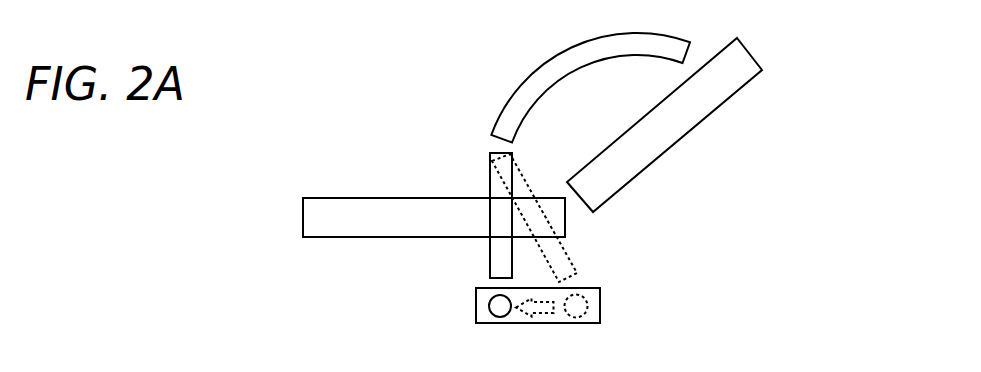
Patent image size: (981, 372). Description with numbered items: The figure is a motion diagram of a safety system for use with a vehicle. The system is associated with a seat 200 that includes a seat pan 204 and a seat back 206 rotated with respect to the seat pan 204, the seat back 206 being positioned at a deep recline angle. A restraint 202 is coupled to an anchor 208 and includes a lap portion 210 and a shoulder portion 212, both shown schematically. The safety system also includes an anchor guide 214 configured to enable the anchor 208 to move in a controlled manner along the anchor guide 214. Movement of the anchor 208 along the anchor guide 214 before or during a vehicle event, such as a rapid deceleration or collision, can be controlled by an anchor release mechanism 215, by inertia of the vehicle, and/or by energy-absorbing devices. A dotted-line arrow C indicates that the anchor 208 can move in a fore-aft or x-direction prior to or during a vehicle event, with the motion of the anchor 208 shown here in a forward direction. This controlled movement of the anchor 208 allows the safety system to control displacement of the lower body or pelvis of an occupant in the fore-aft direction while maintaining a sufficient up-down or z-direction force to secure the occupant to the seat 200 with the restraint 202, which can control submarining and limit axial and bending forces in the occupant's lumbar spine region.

The seat 200 is at (342, 153).
The restraint 202 is at (512, 67).
The seat pan 204 is at (303, 219).
The seat back 206 is at (751, 55).
The anchor 208 is at (480, 306).
The lap portion 210 is at (490, 258).
The shoulder portion 212 is at (638, 34).
The anchor guide 214 is at (600, 306).
The anchor release mechanism 215 is at (563, 308).
The dotted-line arrow C is at (541, 317).